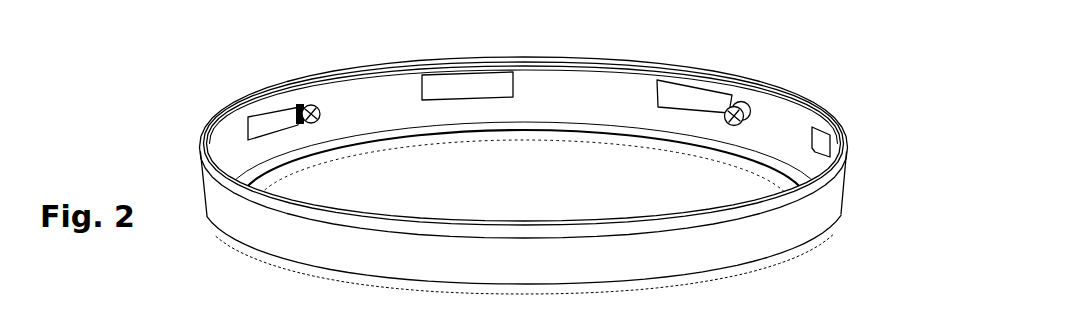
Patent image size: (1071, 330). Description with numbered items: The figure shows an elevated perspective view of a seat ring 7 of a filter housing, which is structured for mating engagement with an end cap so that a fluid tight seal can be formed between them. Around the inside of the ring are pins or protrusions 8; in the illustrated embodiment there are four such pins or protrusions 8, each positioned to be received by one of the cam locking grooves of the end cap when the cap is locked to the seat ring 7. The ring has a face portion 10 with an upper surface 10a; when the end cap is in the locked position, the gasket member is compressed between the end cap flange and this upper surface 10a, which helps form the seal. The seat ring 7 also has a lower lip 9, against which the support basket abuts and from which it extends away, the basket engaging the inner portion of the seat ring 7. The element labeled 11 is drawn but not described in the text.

The seat ring 7 is at (788, 228).
The pin or protrusion 8 is at (300, 107).
The lower lip 9 is at (547, 128).
The face portion 10 is at (846, 163).
The upper surface 10a is at (202, 142).
The slots in inner wall 11 is at (777, 137).